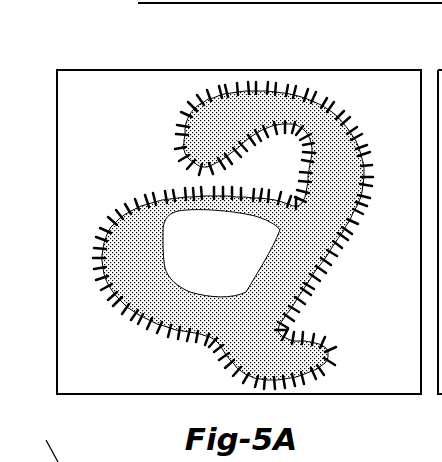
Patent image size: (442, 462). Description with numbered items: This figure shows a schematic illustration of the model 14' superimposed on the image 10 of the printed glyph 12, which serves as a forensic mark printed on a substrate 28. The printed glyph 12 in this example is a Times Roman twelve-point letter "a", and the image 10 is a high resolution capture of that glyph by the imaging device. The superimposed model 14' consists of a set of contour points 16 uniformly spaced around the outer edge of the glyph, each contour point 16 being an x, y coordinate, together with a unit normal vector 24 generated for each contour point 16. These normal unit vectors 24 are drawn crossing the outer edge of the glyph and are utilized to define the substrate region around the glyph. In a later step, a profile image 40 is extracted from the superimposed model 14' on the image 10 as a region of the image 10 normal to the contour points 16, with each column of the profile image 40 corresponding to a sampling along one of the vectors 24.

The image 10 is at (221, 199).
The substrate 28 is at (105, 141).
The contour points 16 is at (210, 216).
The unit normal vectors 24 is at (330, 119).
The model 14' is at (194, 235).
The printed glyph 12 is at (152, 298).
The profile image 40 is at (44, 440).